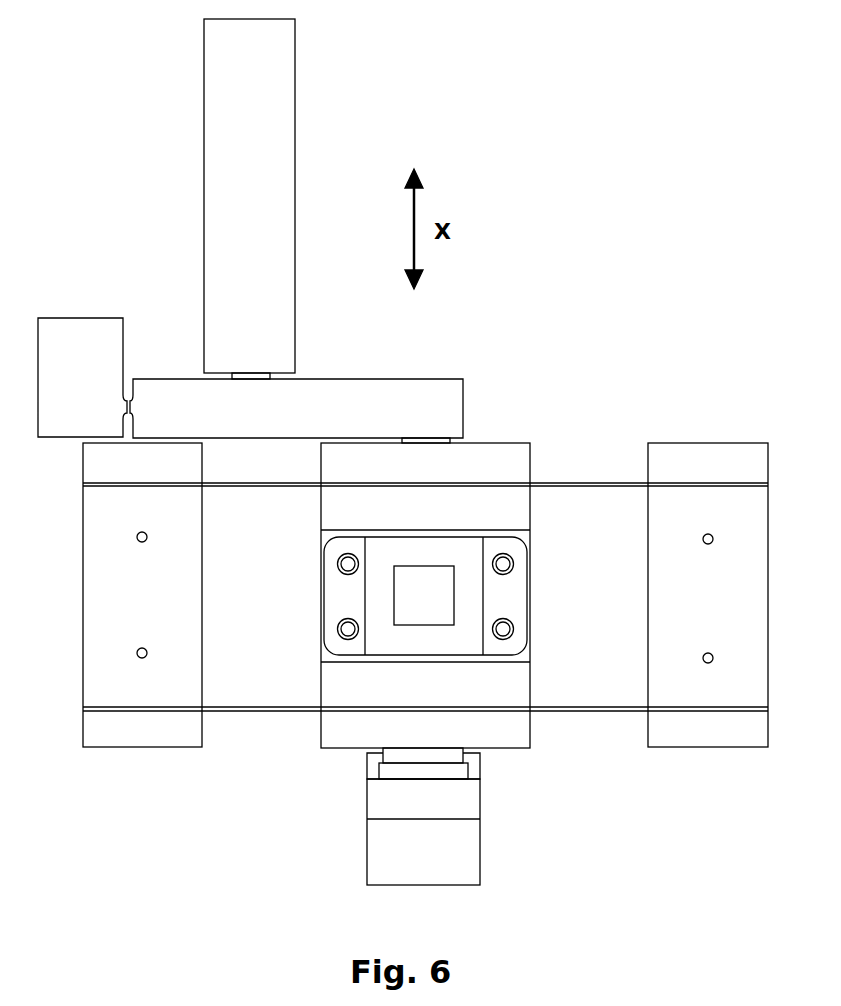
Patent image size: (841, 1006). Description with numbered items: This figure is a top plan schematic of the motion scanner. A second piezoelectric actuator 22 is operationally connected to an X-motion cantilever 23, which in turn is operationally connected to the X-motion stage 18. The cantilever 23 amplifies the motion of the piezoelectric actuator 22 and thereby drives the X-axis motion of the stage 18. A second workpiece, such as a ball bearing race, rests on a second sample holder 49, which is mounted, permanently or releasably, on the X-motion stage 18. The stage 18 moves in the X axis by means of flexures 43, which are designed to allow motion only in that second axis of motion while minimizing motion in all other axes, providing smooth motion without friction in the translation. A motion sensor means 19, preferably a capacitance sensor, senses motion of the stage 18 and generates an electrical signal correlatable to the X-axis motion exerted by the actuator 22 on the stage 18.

The second piezoelectric actuator 22 is at (295, 155).
The X-motion cantilever 23 is at (260, 418).
The X-motion stage 18 is at (508, 443).
The second sample holder 49 is at (440, 578).
The flexures 43 is at (289, 490).
The motion sensor means 19 is at (468, 770).